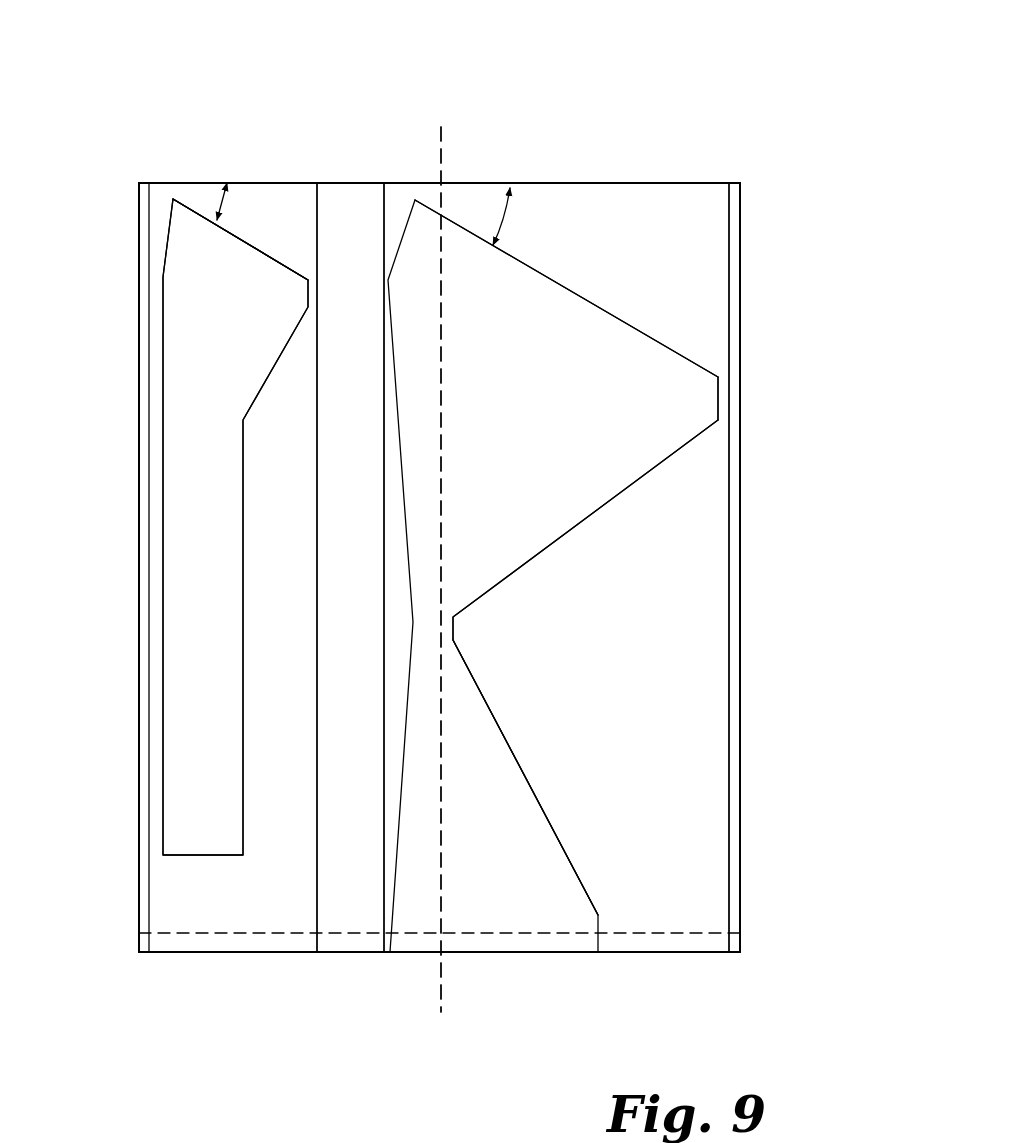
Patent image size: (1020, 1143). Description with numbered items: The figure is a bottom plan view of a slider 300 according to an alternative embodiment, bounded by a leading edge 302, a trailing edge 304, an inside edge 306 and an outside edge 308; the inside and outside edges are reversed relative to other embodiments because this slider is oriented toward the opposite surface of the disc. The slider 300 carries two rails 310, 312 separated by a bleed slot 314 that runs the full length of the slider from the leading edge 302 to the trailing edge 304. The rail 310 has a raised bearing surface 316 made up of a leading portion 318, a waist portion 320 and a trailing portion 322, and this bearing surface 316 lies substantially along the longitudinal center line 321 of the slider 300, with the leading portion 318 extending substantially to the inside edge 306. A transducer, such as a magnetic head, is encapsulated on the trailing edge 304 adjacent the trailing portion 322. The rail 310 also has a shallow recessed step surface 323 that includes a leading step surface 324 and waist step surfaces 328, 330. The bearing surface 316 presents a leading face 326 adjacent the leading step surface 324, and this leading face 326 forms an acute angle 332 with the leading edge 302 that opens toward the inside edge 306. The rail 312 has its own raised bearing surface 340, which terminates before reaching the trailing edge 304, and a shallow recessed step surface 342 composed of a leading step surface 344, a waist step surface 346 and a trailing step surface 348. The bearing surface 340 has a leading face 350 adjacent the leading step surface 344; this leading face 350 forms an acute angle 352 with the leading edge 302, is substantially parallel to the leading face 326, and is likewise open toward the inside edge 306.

The slider 300 is at (592, 92).
The leading edge 302 is at (489, 183).
The trailing edge 304 is at (570, 953).
The inside edge 306 is at (740, 878).
The outside edge 308 is at (138, 885).
The rail 310 is at (578, 183).
The rail 312 is at (247, 182).
The bleed slot 314 is at (347, 182).
The raised bearing surface 316 is at (558, 493).
The leading portion 318 is at (660, 405).
The waist portion 320 is at (425, 637).
The longitudinal center line 321 is at (441, 991).
The trailing portion 322 is at (500, 847).
The shallow recessed step surface 323 is at (665, 625).
The leading step surface 324 is at (707, 240).
The leading face 326 is at (598, 310).
The waist step surface 328 is at (660, 678).
The waist step surface 330 is at (385, 622).
The acute angle 332 is at (513, 213).
The raised bearing surface 340 is at (198, 427).
The shallow recessed step surface 342 is at (280, 672).
The leading step surface 344 is at (265, 222).
The waist step surface 346 is at (282, 470).
The trailing step surface 348 is at (200, 915).
The leading face 350 is at (263, 255).
The acute angle 352 is at (220, 202).